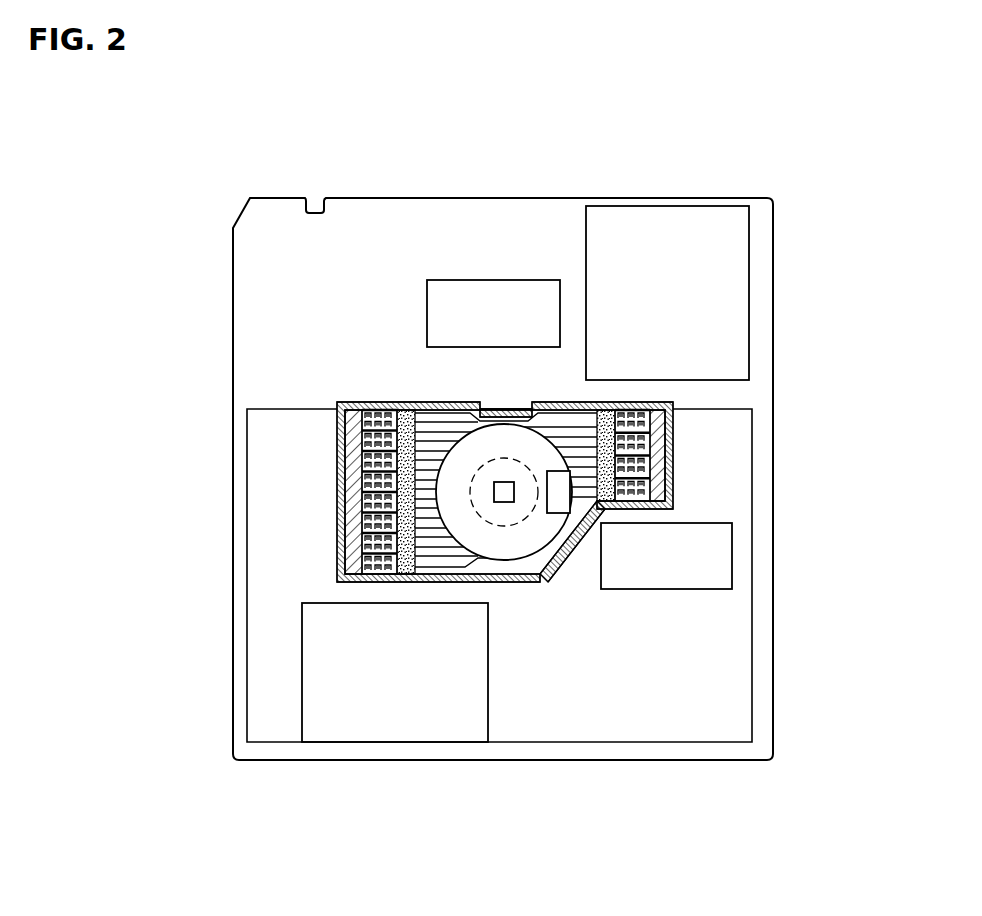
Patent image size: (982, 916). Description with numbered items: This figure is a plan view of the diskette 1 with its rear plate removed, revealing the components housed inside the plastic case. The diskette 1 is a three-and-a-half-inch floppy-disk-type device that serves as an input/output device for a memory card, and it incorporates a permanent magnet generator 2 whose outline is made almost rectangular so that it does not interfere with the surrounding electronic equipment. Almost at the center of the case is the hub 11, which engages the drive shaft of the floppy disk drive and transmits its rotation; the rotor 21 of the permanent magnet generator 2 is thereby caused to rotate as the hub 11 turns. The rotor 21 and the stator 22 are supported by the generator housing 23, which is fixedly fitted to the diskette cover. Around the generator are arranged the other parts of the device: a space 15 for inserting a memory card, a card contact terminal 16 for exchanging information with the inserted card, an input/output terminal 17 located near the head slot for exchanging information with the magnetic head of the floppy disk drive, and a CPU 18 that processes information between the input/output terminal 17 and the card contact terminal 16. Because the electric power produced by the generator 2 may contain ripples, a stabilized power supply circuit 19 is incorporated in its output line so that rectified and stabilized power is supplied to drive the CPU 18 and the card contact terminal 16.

The diskette 1 is at (773, 233).
The permanent magnet generator 2 is at (589, 614).
The hub 11 is at (530, 620).
The rotor 21 is at (517, 532).
The space 15 is at (707, 712).
The card contact terminal 16 is at (702, 567).
The input/output terminal 17 is at (459, 303).
The CPU 18 is at (648, 270).
The stabilized power supply circuit 19 is at (360, 668).
The stator 22 is at (433, 547).
The generator housing 23 is at (382, 582).